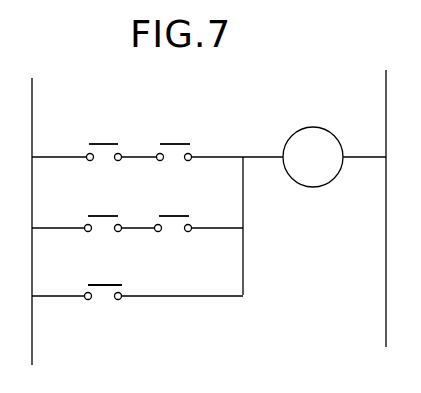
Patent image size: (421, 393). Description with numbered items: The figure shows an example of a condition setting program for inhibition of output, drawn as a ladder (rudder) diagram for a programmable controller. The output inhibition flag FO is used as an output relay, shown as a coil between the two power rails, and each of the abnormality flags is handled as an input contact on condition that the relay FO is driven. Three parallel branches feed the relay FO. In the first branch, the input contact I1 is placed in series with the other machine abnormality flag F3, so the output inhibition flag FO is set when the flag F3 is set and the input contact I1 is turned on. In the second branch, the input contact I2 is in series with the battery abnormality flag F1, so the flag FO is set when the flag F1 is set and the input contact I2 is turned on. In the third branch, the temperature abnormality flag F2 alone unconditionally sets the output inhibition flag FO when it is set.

The input contact I1 is at (104, 138).
The other machine abnormality flag F3 is at (174, 138).
The input contact I2 is at (103, 210).
The battery abnormality flag F1 is at (173, 210).
The temperature abnormality flag F2 is at (104, 279).
The output inhibition flag FO is at (313, 157).